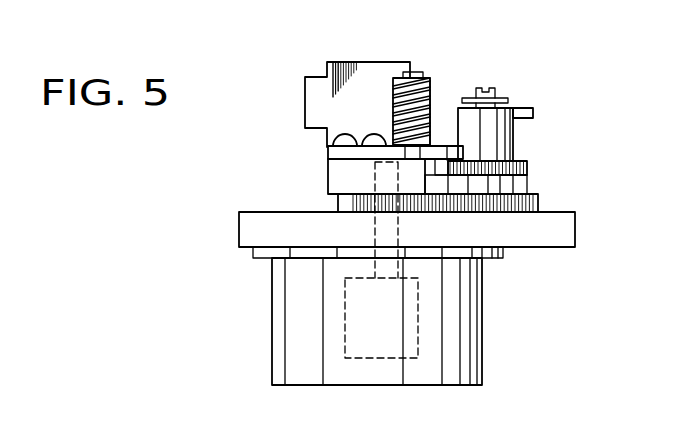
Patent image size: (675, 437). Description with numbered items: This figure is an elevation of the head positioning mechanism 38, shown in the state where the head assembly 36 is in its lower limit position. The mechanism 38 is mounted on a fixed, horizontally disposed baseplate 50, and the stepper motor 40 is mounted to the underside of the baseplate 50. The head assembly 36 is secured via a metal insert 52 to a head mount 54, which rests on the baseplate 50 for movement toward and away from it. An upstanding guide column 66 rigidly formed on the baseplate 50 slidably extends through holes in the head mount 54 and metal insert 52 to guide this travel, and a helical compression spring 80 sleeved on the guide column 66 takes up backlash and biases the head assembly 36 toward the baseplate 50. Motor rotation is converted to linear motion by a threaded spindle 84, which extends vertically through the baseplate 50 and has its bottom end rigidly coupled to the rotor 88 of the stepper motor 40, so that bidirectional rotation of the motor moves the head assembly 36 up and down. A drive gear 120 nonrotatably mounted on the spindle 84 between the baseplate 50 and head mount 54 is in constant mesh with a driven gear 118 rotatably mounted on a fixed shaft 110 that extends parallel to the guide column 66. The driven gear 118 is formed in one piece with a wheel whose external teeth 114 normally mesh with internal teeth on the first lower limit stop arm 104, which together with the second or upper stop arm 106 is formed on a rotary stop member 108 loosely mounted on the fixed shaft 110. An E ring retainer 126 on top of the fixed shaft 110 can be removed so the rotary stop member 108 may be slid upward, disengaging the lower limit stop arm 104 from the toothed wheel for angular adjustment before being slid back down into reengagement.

The head positioning mechanism 38 is at (306, 58).
The head assembly 36 is at (358, 62).
The guide column 66 is at (412, 70).
The helical compression spring 80 is at (431, 82).
The first lower limit stop arm 104 is at (447, 146).
The fixed shaft 110 is at (490, 88).
The E ring retainer 126 is at (497, 98).
The second or upper stop arm 106 is at (536, 108).
The rotary stop member 108 is at (510, 140).
The external teeth 114 is at (527, 165).
The driven gear 118 is at (539, 194).
The metal insert 52 is at (327, 149).
The head mount 54 is at (333, 172).
The drive gear 120 is at (353, 202).
The baseplate 50 is at (577, 230).
The threaded spindle 84 is at (403, 265).
The rotor 88 is at (418, 300).
The stepper motor 40 is at (272, 320).